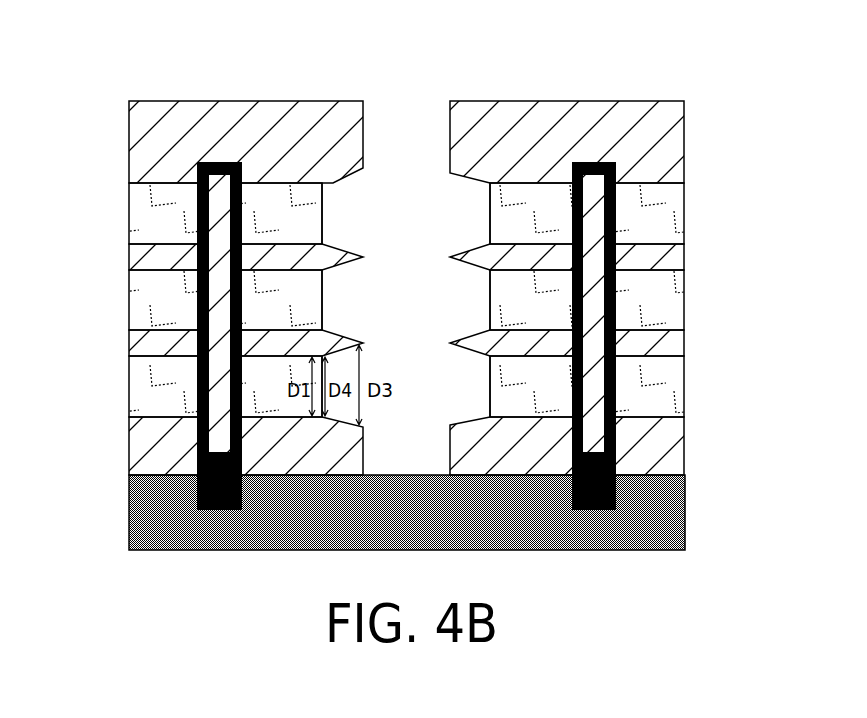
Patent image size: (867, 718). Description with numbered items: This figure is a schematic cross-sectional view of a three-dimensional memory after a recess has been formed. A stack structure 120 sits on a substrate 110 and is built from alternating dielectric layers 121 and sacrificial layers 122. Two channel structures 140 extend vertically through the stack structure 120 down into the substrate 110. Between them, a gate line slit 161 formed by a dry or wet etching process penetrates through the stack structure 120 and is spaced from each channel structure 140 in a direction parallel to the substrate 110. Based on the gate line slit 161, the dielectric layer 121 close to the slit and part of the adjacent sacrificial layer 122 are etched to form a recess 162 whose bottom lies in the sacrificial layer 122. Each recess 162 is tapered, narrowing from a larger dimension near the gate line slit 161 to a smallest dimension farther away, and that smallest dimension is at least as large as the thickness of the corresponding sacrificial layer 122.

The substrate 110 is at (660, 503).
The stack structure 120 is at (419, 331).
The dielectric layer 121 is at (660, 263).
The sacrificial layer 122 is at (660, 312).
The channel structure 140 is at (590, 163).
The gate line slit 161 is at (413, 133).
The recess 162 is at (465, 213).